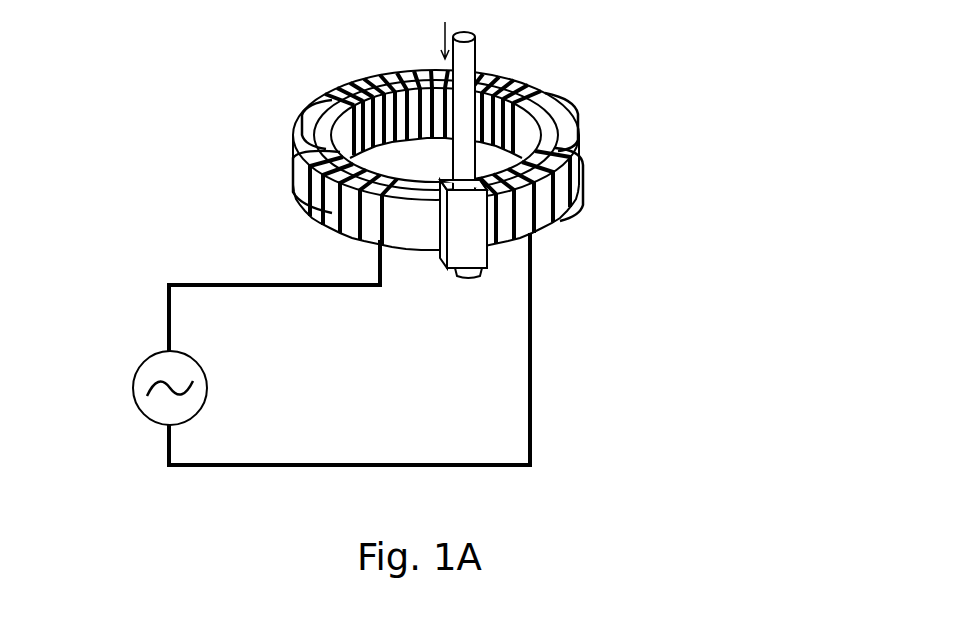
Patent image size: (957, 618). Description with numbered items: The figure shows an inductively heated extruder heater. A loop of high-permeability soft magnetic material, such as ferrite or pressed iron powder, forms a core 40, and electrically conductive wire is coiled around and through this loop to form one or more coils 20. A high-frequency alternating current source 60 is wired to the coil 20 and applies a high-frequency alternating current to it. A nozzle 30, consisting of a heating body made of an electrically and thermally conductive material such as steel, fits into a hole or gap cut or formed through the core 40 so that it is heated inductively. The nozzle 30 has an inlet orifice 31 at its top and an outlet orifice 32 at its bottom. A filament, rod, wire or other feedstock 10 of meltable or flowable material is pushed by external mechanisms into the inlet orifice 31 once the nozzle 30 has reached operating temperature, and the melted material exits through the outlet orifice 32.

The feedstock 10 is at (482, 43).
The coil 20 is at (293, 160).
The nozzle 30 is at (473, 245).
The inlet orifice 31 is at (485, 187).
The outlet orifice 32 is at (465, 277).
The core 40 is at (412, 233).
The high-frequency alternating current source 60 is at (135, 355).